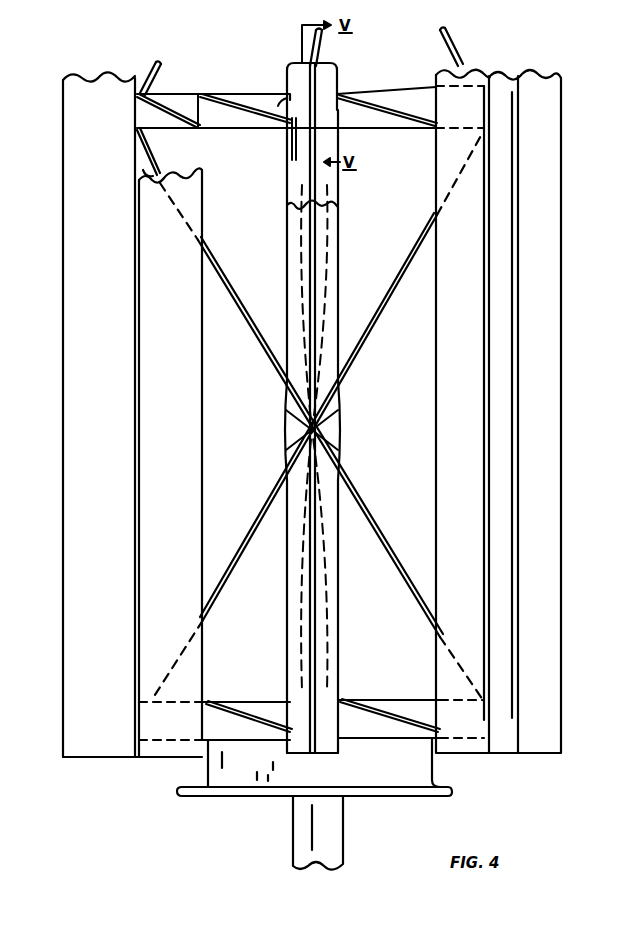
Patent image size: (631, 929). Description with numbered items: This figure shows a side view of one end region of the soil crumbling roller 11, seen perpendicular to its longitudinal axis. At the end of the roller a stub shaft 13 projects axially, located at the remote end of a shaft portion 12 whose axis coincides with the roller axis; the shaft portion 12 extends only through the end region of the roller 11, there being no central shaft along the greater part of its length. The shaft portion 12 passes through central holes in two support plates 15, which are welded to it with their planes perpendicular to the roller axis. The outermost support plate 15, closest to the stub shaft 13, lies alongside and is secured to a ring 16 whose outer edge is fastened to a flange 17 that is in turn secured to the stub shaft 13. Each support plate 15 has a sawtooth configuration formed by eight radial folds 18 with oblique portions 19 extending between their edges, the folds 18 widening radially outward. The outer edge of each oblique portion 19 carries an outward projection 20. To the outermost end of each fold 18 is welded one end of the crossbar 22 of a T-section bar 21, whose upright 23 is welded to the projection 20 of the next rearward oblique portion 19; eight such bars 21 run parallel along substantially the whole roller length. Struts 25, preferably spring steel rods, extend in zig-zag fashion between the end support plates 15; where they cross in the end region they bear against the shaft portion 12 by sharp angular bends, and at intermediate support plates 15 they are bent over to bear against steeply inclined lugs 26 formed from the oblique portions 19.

The soil crumbling roller 11 is at (114, 768).
The shaft portion 12 is at (340, 82).
The stub shaft 13 is at (300, 822).
The support plate 15 is at (404, 132).
The ring 16 is at (207, 766).
The flange 17 is at (206, 794).
The radial fold 18 is at (178, 106).
The oblique portion 19 is at (242, 96).
The outward projection 20 is at (284, 100).
The T-section bar 21 is at (62, 200).
The crossbar 22 is at (140, 413).
The upright 23 is at (286, 276).
The strut 25 is at (333, 48).
The lug 26 is at (291, 138).